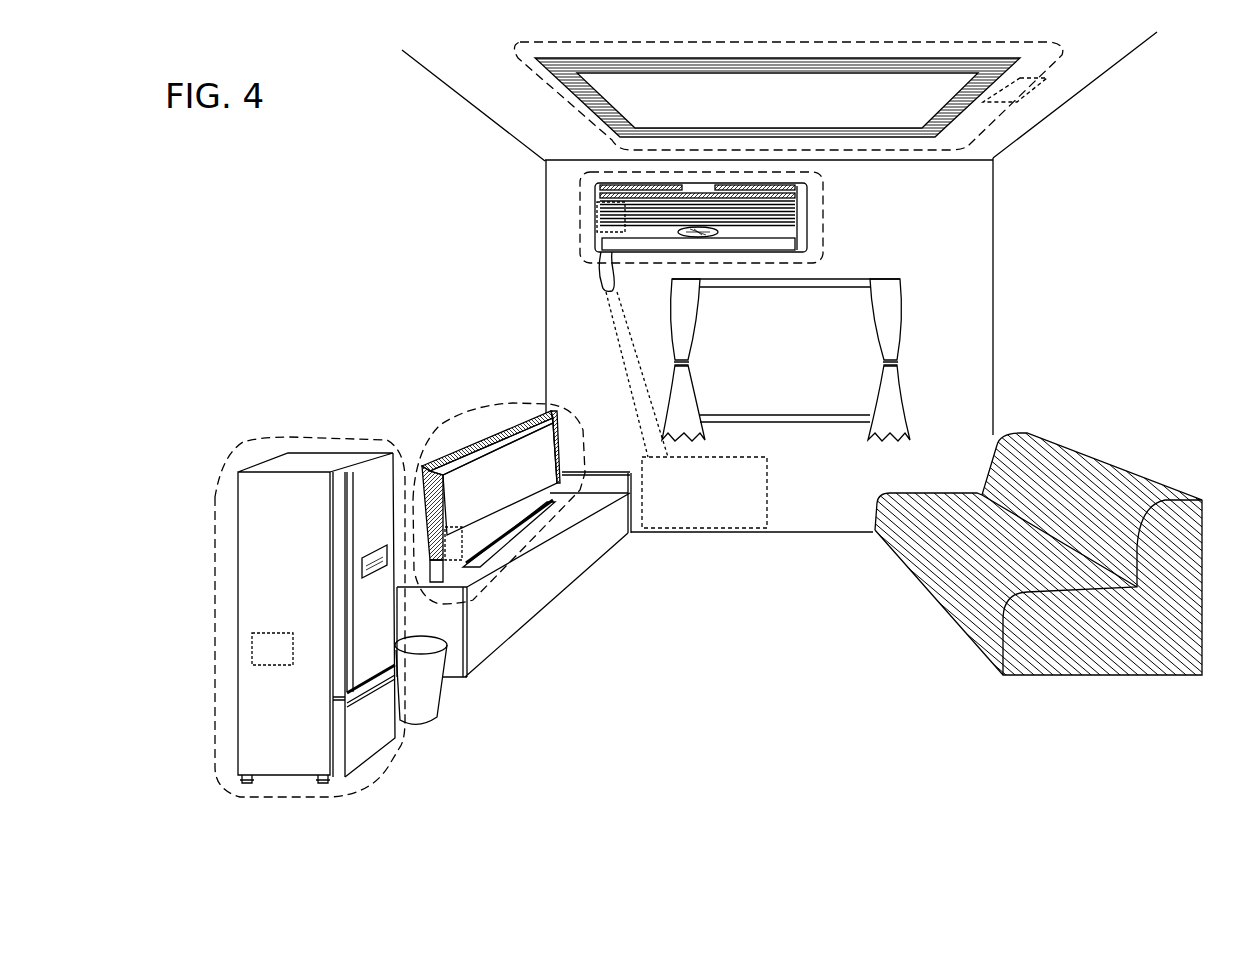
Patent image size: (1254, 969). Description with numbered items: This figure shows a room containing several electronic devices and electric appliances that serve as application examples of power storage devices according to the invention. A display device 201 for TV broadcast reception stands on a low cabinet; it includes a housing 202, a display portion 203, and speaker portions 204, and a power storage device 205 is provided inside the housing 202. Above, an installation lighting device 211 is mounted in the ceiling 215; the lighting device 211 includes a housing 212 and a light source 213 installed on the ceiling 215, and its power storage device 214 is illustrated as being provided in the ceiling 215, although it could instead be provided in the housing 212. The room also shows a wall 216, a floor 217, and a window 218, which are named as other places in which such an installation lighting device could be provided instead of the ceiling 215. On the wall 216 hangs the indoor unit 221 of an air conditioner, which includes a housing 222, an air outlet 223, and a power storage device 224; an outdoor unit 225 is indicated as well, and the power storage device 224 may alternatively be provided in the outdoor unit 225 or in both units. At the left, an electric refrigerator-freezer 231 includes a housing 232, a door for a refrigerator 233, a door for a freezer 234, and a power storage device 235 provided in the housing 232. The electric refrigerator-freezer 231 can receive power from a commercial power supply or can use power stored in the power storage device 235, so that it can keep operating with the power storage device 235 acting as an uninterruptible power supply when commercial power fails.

The display device 201 is at (465, 468).
The housing 202 is at (500, 432).
The display portion 203 is at (507, 407).
The speaker portions 204 is at (548, 415).
The power storage device 205 is at (462, 525).
The lighting device 211 is at (763, 103).
The housing 212 is at (577, 95).
The light source 213 is at (655, 118).
The power storage device 214 is at (1033, 88).
The ceiling 215 is at (482, 72).
The wall 216 is at (1052, 189).
The floor 217 is at (821, 582).
The window 218 is at (843, 402).
The indoor unit 221 is at (645, 222).
The housing 222 is at (592, 212).
The air outlet 223 is at (612, 245).
The power storage device 224 is at (597, 230).
The outdoor unit 225 is at (682, 487).
The electric refrigerator-freezer 231 is at (266, 617).
The housing 232 is at (250, 547).
The door for a refrigerator 233 is at (370, 617).
The door for a freezer 234 is at (372, 732).
The power storage device 235 is at (252, 648).